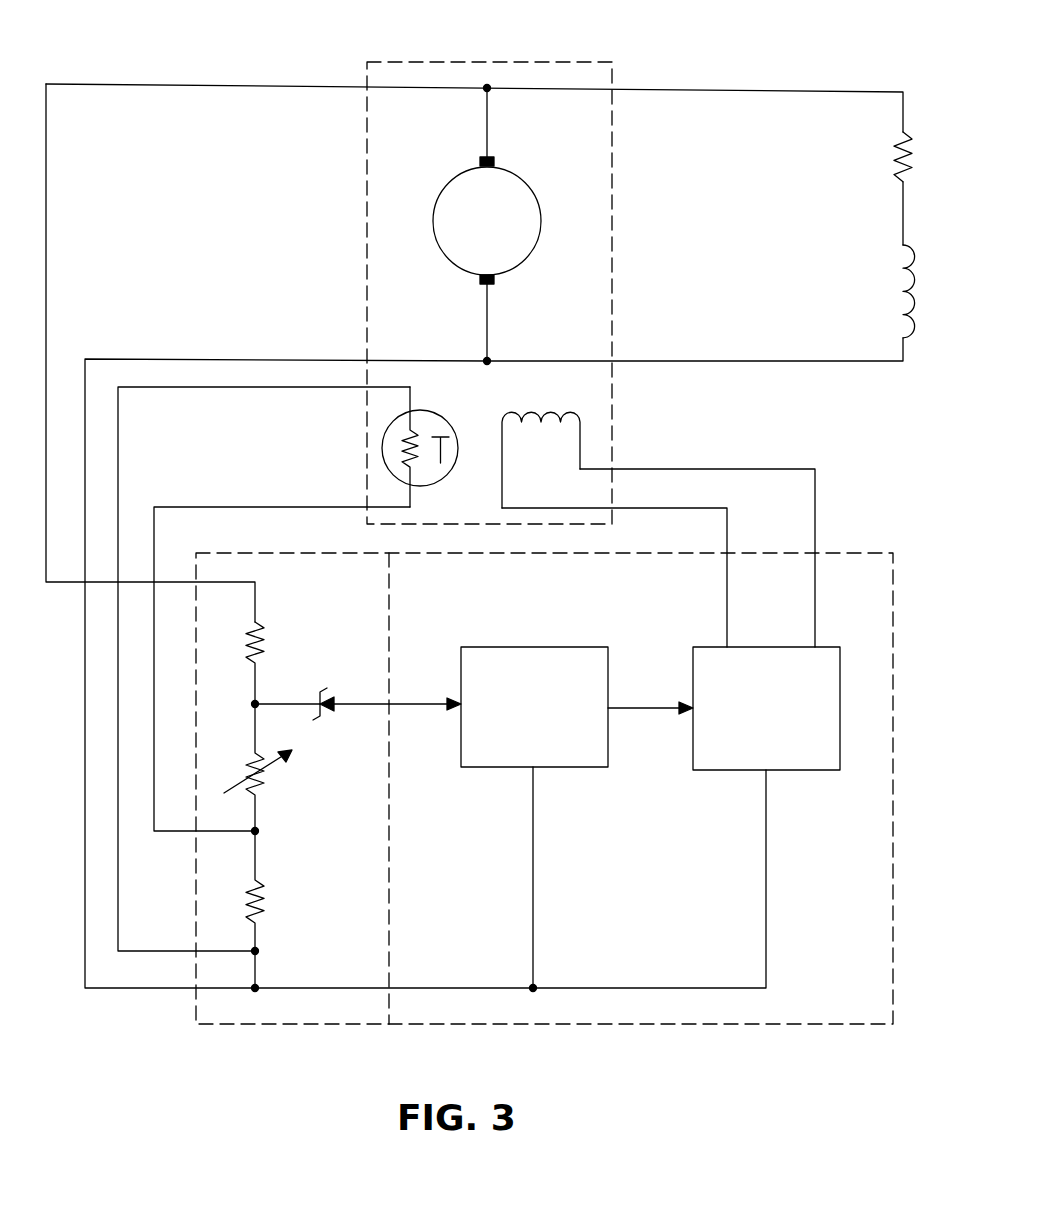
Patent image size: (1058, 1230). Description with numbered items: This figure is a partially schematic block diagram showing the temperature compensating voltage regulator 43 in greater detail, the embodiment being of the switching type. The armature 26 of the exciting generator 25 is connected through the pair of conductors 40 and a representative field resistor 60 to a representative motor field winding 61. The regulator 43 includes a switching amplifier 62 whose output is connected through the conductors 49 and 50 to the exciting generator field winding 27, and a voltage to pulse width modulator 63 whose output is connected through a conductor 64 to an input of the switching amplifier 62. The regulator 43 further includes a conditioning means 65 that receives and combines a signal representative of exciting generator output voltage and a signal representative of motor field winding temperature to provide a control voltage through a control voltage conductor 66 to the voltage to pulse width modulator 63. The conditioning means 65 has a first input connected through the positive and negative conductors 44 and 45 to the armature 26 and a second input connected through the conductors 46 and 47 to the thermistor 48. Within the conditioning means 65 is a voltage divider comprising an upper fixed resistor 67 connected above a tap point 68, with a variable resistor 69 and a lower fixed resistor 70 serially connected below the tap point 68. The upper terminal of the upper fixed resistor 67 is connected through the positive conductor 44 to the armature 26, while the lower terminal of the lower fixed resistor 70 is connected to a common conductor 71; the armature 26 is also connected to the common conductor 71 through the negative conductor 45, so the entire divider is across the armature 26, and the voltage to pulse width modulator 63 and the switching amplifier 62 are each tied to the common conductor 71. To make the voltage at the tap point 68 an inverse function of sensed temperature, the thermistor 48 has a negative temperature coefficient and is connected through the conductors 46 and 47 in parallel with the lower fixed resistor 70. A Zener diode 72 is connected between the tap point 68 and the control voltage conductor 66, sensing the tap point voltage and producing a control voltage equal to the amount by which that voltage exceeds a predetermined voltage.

The exciting generator 25 is at (497, 62).
The armature 26 is at (436, 204).
The exciting generator field winding 27 is at (573, 412).
The pair of conductors 40 is at (739, 92).
The temperature compensating voltage regulator 43 is at (646, 1025).
The positive conductor 44 is at (48, 295).
The negative conductor 45 is at (175, 359).
The conductor 46 is at (309, 389).
The conductor 47 is at (299, 507).
The thermistor 48 is at (450, 423).
The conductor 49 is at (727, 521).
The conductor 50 is at (795, 469).
The field resistor 60 is at (892, 159).
The motor field winding 61 is at (898, 278).
The switching amplifier 62 is at (684, 770).
The voltage to pulse width modulator 63 is at (522, 647).
The conductor 64 is at (652, 708).
The conditioning means 65 is at (340, 593).
The control voltage conductor 66 is at (362, 714).
The upper fixed resistor 67 is at (267, 639).
The tap point 68 is at (251, 707).
The variable resistor 69 is at (264, 777).
The lower fixed resistor 70 is at (263, 904).
The common conductor 71 is at (334, 985).
The Zener diode 72 is at (327, 698).